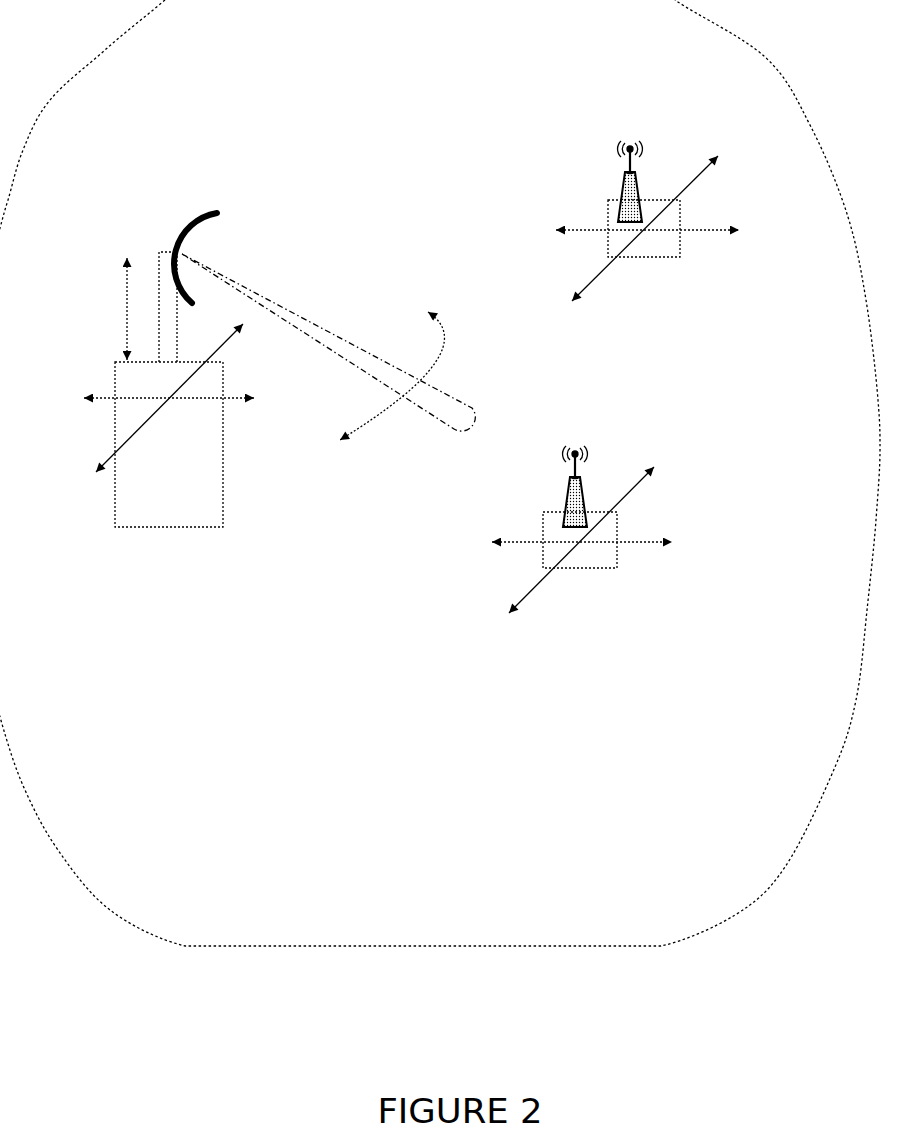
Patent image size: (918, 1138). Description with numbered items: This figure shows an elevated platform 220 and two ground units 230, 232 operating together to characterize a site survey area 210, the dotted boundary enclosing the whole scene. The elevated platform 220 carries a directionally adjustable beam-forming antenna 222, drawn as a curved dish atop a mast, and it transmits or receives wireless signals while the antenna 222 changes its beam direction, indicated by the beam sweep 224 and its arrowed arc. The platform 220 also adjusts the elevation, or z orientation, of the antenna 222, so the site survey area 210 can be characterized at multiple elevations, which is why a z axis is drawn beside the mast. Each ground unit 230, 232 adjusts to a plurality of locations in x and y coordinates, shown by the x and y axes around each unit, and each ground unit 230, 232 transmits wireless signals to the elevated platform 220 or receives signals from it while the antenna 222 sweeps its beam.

The site survey area 210 is at (408, 60).
The elevated platform 220 is at (153, 518).
The directionally adjustable beam-forming antenna 222 is at (170, 214).
The beam sweep 224 is at (360, 326).
The ground unit 230 is at (683, 344).
The ground unit 232 is at (598, 656).